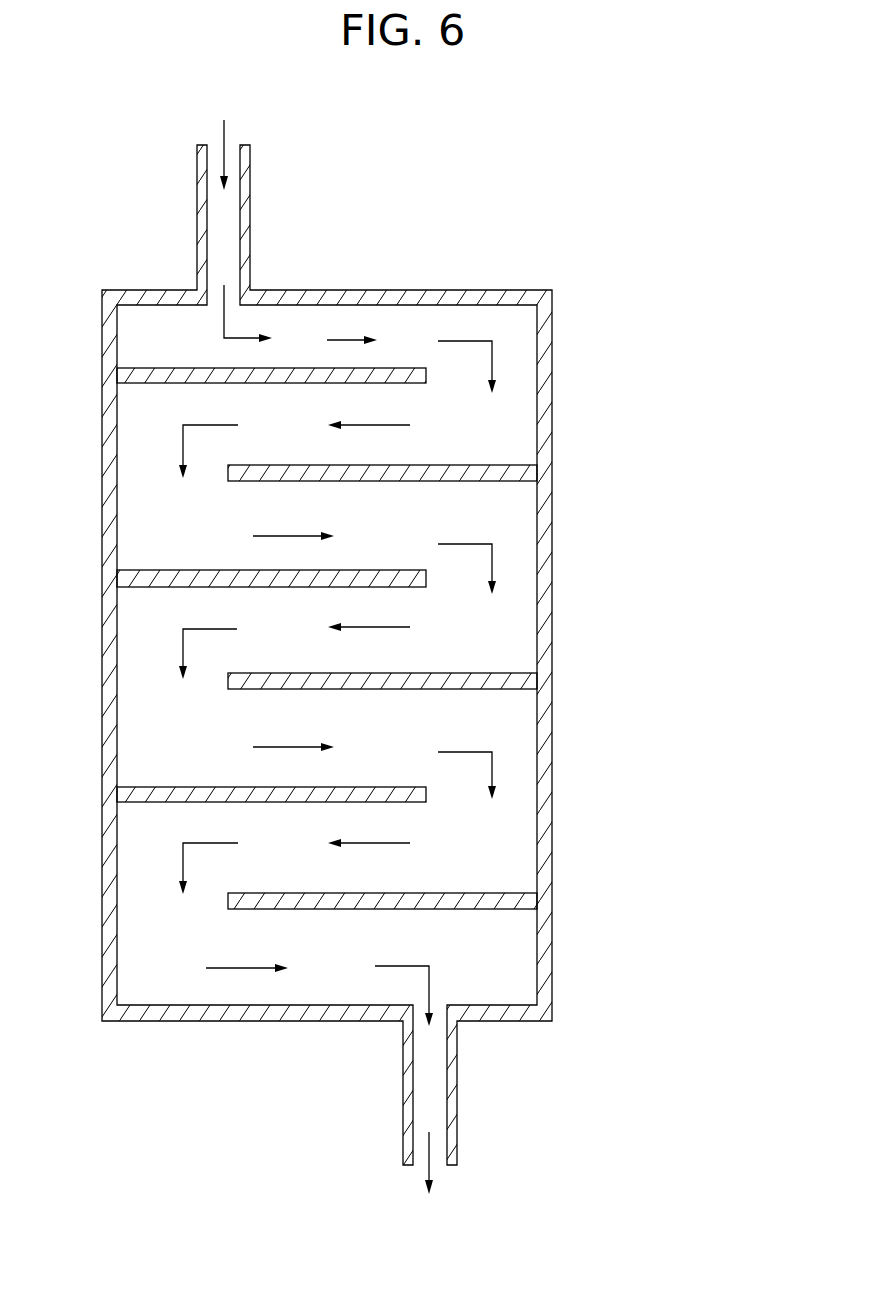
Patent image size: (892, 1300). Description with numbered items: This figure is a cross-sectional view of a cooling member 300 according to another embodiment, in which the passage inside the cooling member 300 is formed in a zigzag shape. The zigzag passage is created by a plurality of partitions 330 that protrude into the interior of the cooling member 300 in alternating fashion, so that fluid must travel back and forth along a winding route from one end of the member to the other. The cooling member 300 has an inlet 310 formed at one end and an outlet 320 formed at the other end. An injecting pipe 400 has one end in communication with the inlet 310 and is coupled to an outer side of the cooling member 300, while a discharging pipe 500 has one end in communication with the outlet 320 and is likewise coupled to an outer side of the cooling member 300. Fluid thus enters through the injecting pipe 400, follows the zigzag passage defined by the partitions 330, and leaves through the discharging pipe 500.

The cooling member 300 is at (500, 235).
The inlet 310 is at (231, 302).
The outlet 320 is at (420, 1008).
The partitions 330 is at (426, 375).
The injecting pipe 400 is at (245, 207).
The discharging pipe 500 is at (453, 1085).